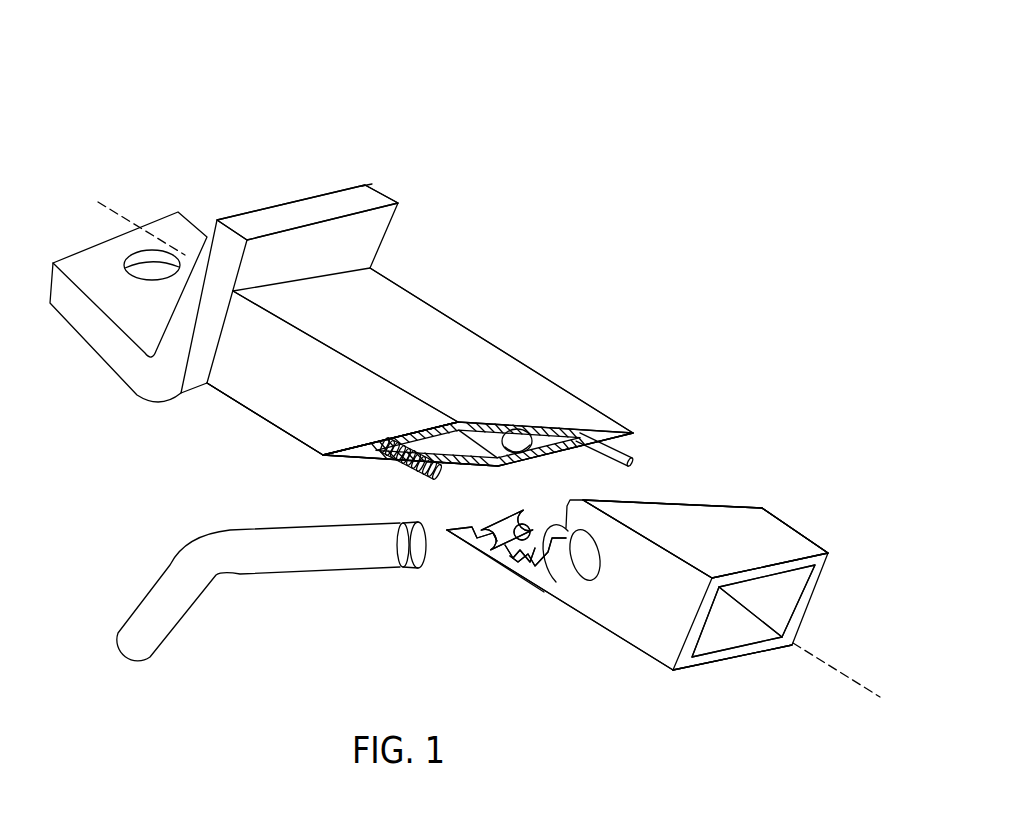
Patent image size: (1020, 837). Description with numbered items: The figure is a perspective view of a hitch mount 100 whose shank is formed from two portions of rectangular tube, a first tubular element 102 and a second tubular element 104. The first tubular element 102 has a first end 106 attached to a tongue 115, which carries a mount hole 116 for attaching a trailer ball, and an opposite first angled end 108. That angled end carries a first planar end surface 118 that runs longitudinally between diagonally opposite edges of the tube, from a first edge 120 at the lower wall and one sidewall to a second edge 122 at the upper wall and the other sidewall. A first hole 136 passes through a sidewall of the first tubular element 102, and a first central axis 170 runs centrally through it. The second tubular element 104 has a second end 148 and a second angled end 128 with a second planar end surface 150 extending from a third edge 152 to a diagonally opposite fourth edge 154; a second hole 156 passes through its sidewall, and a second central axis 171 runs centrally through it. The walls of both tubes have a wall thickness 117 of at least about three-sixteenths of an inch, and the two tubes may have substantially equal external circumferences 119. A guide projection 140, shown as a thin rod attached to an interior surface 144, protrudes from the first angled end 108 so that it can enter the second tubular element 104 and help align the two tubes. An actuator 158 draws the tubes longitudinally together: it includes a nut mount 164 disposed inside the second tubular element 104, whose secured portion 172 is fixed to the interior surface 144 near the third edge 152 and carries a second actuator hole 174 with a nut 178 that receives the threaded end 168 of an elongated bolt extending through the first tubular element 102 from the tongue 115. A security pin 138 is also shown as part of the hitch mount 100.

The hitch mount 100 is at (570, 70).
The first tubular element 102 is at (425, 276).
The second tubular element 104 is at (782, 504).
The first end 106 is at (358, 252).
The first angled end 108 is at (635, 433).
The tongue 115 is at (368, 193).
The mount hole 116 is at (158, 257).
The wall thickness 117 is at (553, 482).
The first planar end surface 118 is at (560, 432).
The external circumference 119 is at (707, 670).
The first edge 120 is at (323, 457).
The second edge 122 is at (638, 432).
The second angled end 128 is at (727, 503).
The first hole 136 is at (529, 432).
The security pin 138 is at (222, 566).
The guide projection 140 is at (632, 437).
The interior surface 144 is at (737, 635).
The second end 148 is at (817, 597).
The second planar end surface 150 is at (673, 502).
The third edge 152 is at (442, 531).
The fourth edge 154 is at (763, 507).
The second hole 156 is at (575, 585).
The actuator 158 is at (485, 506).
The nut mount 164 is at (480, 508).
The threaded end 168 is at (443, 467).
The first central axis 170 is at (108, 207).
The second central axis 171 is at (837, 663).
The secured portion 172 is at (477, 547).
The second actuator hole 174 is at (500, 550).
The nut 178 is at (520, 545).